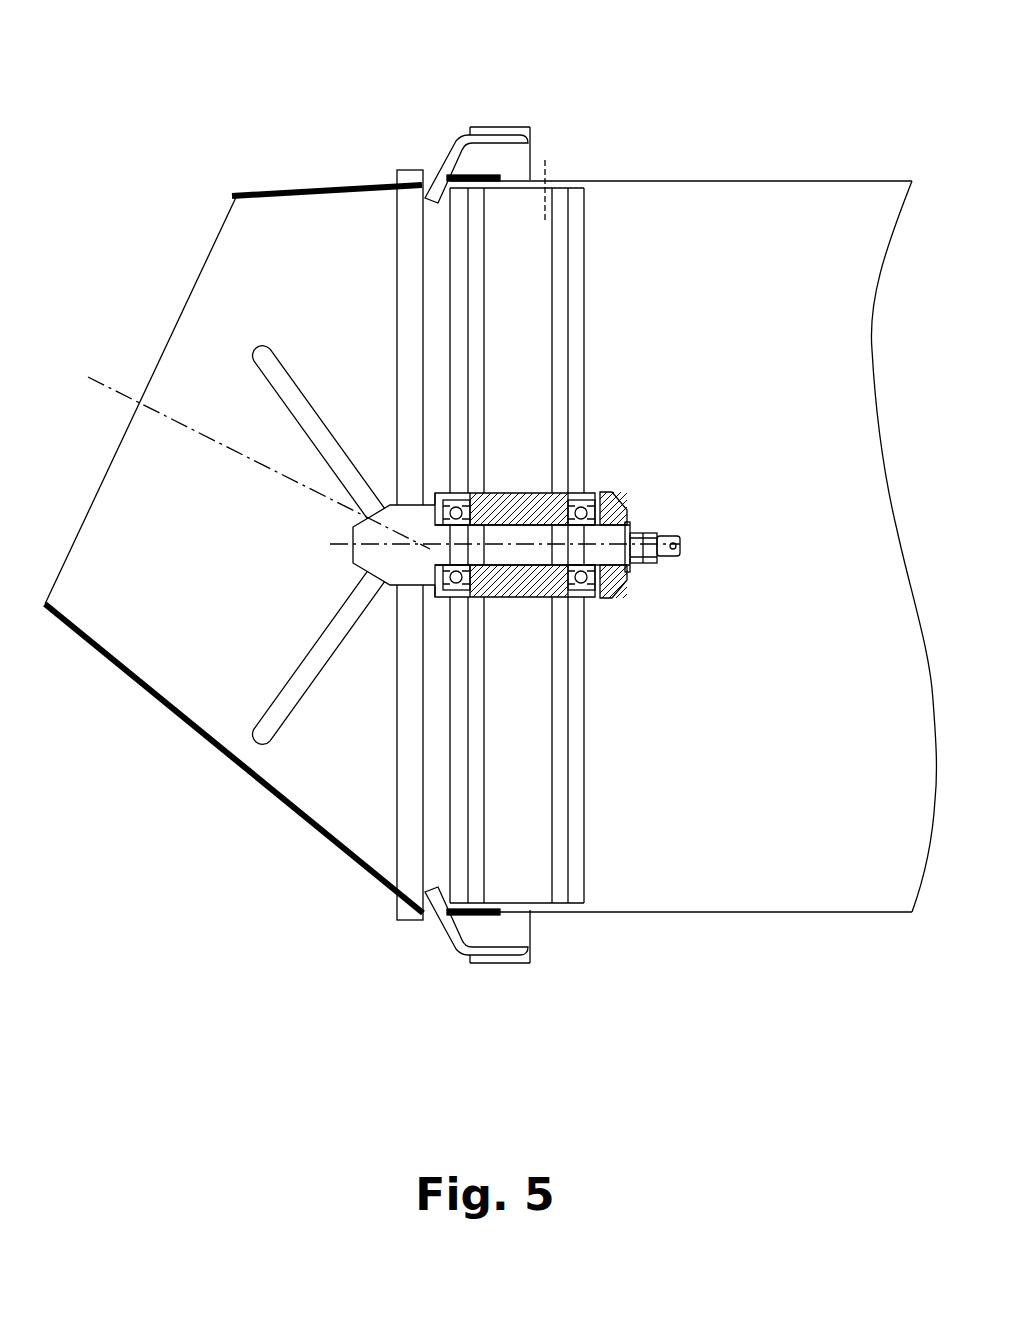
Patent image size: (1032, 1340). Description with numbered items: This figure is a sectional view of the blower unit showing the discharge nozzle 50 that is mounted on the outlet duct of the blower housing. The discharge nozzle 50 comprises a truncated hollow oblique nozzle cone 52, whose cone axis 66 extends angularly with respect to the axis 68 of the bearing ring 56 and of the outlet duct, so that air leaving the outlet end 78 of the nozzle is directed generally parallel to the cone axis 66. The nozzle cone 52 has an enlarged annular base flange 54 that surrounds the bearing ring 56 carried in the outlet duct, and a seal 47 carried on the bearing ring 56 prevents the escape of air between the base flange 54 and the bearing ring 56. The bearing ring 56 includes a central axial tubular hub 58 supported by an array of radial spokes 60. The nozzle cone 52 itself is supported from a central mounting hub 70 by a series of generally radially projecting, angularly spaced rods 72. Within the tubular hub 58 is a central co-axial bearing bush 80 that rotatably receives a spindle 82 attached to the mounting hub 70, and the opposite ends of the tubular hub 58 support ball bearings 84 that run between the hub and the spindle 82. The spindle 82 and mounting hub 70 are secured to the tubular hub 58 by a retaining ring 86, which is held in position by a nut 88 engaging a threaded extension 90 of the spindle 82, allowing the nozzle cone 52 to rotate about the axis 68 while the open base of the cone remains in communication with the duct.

The discharge nozzle 50 is at (377, 123).
The enlarged annular base flange 54 is at (483, 143).
The bearing ring 56 is at (545, 203).
The radial spokes 60 is at (477, 352).
The central axial tubular hub 58 is at (527, 493).
The bearing bush 80 is at (548, 493).
The retaining ring 86 is at (618, 502).
The nut 88 is at (645, 531).
The threaded extension 90 is at (668, 560).
The ball bearings 84 is at (583, 598).
The axis of the bearing ring 68 is at (607, 590).
The spindle 82 is at (532, 555).
The central mounting hub 70 is at (355, 557).
The radially projecting rods 72 is at (405, 353).
The cone axis 66 is at (102, 381).
The outlet end 78 is at (86, 515).
The nozzle cone 52 is at (178, 678).
The seal 47 is at (477, 923).